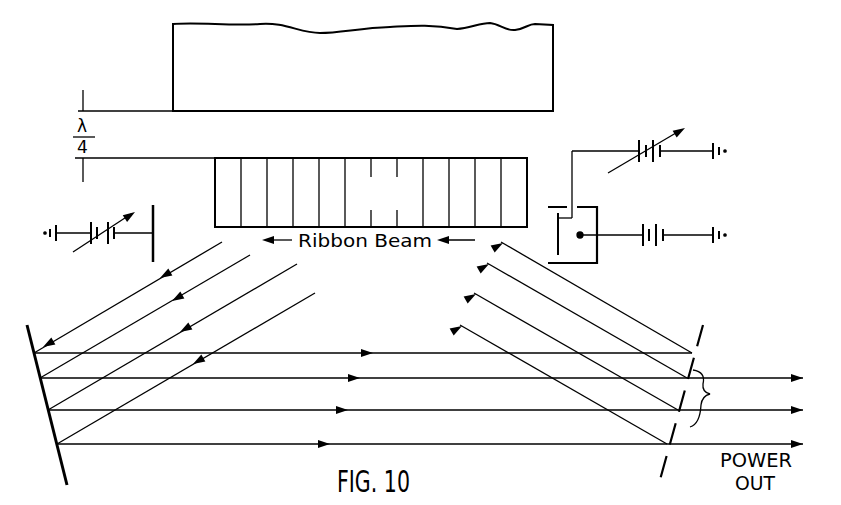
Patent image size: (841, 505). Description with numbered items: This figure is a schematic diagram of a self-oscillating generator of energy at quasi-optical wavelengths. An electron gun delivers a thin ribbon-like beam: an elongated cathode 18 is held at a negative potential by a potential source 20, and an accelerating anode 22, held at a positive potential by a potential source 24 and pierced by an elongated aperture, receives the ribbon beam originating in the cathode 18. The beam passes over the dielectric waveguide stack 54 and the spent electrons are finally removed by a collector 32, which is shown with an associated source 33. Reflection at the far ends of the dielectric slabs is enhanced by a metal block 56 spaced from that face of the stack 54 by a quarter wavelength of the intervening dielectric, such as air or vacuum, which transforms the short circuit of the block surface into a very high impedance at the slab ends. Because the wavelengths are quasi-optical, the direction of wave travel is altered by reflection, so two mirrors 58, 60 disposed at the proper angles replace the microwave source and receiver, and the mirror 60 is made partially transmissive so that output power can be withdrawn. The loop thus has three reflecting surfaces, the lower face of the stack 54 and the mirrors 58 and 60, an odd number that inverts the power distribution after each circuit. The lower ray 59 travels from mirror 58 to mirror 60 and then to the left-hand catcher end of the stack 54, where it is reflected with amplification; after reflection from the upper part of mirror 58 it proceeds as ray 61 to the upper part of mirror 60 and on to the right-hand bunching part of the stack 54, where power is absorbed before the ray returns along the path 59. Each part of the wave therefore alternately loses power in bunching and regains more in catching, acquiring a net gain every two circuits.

The cathode 18 is at (583, 239).
The potential source 20 is at (663, 249).
The accelerating anode 22 is at (557, 244).
The potential source 24 is at (643, 138).
The collector 32 is at (155, 214).
The variable collector voltage source 33 is at (104, 219).
The stack 54 is at (396, 202).
The metal block 56 is at (382, 87).
The mirror 58 is at (68, 480).
The lower ray 59 is at (486, 447).
The mirror 60 is at (710, 394).
The ray 61 is at (327, 352).